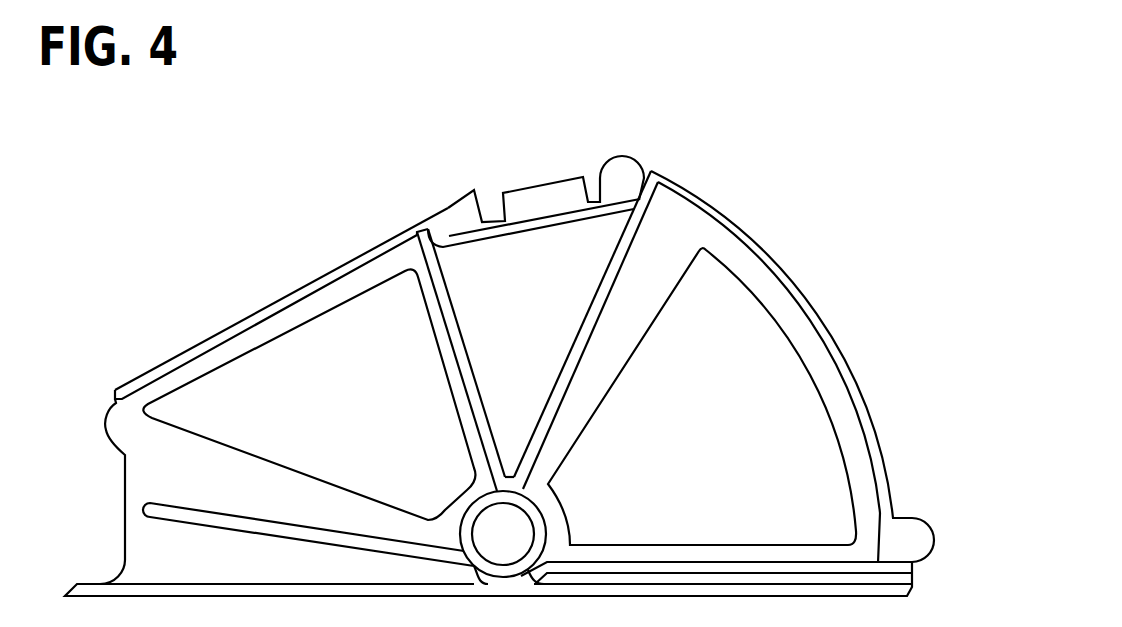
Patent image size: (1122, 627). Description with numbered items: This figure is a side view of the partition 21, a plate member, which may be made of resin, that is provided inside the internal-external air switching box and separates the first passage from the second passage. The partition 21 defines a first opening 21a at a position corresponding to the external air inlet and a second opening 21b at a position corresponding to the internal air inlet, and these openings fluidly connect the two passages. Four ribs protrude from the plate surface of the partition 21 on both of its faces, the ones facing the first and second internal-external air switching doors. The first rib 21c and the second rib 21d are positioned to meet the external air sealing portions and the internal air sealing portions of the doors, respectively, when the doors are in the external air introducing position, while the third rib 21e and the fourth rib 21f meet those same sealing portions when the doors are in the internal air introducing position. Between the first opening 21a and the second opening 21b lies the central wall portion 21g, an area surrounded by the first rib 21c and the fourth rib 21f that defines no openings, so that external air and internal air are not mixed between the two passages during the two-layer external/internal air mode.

The partition 21 is at (446, 203).
The first opening 21a is at (275, 337).
The second opening 21b is at (789, 329).
The first rib 21c is at (437, 300).
The second rib 21d is at (785, 560).
The third rib 21e is at (230, 520).
The fourth rib 21f is at (628, 257).
The central wall portion 21g is at (536, 257).